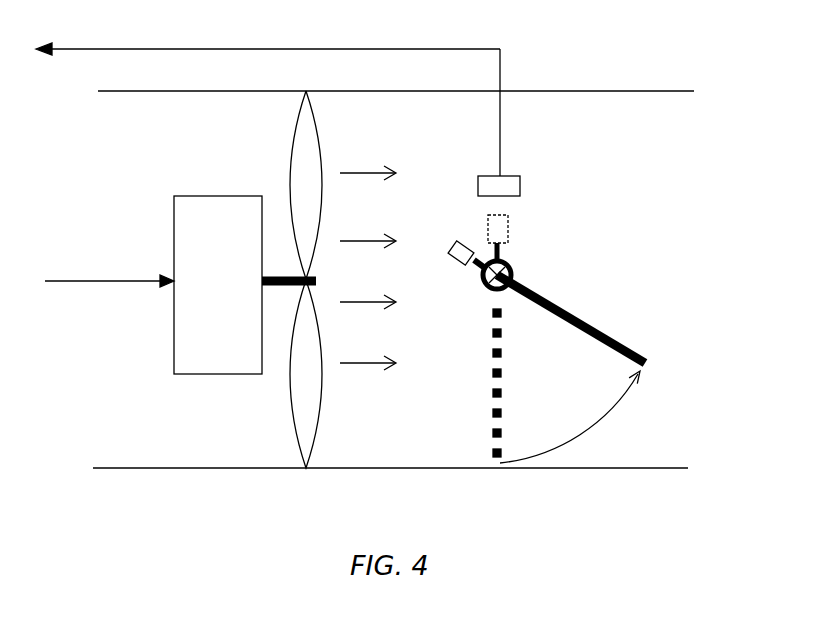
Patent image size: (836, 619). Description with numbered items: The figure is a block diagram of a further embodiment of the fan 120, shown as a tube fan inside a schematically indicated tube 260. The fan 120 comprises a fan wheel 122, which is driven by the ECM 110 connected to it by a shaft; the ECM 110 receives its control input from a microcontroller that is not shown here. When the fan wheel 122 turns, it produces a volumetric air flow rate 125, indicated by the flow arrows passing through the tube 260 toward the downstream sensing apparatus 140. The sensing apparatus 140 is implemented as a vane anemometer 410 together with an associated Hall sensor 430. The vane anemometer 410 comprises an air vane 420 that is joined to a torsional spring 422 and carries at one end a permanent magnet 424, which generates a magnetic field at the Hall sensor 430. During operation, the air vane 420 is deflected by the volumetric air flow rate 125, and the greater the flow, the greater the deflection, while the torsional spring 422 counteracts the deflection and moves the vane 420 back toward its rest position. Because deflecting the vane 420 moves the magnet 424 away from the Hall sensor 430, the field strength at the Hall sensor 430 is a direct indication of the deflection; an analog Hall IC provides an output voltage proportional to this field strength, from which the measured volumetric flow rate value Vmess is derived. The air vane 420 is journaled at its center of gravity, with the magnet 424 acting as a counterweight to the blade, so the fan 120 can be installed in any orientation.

The ECM 110 is at (232, 196).
The fan 120 is at (684, 66).
The fan wheel 122 is at (293, 141).
The volumetric air flow rate 125 is at (365, 138).
The sensing apparatus 140 is at (455, 385).
The tube 260 is at (212, 483).
The vane anemometer 410 is at (612, 282).
The air vane 420 is at (628, 350).
The torsional spring 422 is at (516, 264).
The permanent magnet 424 is at (458, 240).
The Hall sensor 430 is at (522, 186).